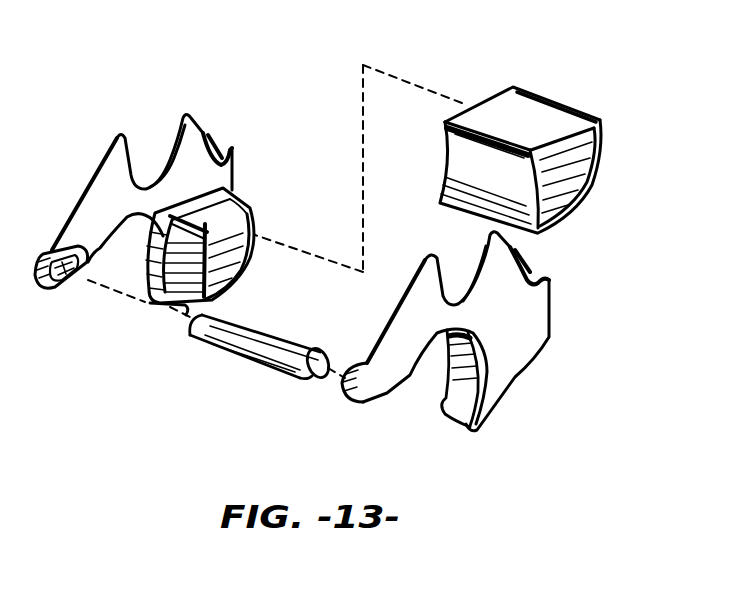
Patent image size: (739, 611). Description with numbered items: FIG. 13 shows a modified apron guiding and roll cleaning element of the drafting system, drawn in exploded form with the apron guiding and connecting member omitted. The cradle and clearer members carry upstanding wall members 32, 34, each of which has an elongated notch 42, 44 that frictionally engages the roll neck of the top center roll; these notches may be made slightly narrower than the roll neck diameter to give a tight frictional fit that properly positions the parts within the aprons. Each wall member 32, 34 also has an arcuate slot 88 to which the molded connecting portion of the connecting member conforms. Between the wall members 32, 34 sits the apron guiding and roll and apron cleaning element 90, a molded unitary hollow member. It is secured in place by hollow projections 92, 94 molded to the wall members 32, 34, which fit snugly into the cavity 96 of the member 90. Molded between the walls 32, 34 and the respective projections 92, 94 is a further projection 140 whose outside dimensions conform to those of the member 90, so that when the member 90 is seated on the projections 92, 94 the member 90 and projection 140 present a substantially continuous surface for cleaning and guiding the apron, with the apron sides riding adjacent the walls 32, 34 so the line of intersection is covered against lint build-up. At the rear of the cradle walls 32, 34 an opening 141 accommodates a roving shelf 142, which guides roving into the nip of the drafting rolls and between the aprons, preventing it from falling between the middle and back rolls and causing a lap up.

The upstanding wall member 32 is at (238, 168).
The upstanding wall member 34 is at (548, 337).
The elongated notch 42 is at (177, 125).
The elongated notch 44 is at (481, 262).
The arcuate slot 88 is at (201, 130).
The apron guiding and roll and apron cleaning element 90 is at (538, 100).
The hollow projection 92 is at (183, 313).
The hollow projection 94 is at (455, 398).
The cavity 96 is at (580, 160).
The further projection 140 is at (250, 195).
The opening 141 is at (67, 286).
The roving shelf 142 is at (250, 320).